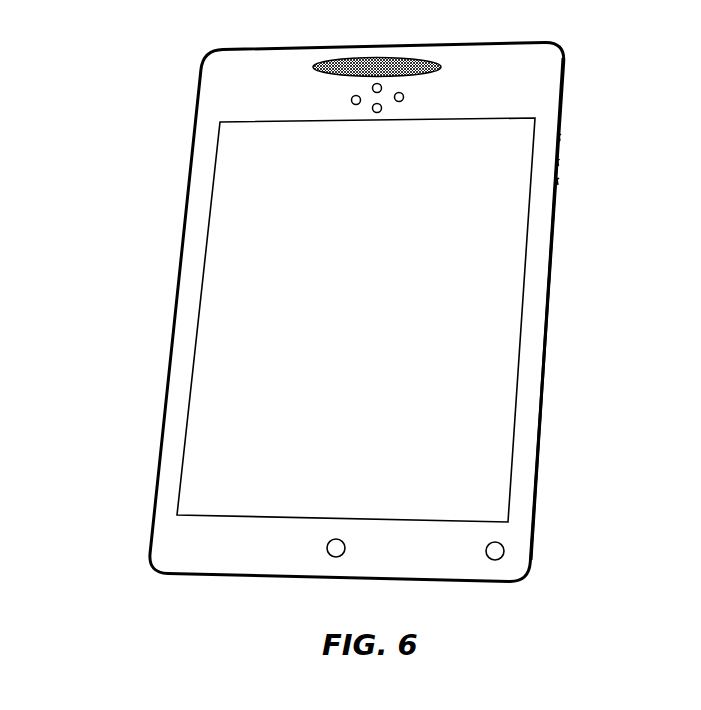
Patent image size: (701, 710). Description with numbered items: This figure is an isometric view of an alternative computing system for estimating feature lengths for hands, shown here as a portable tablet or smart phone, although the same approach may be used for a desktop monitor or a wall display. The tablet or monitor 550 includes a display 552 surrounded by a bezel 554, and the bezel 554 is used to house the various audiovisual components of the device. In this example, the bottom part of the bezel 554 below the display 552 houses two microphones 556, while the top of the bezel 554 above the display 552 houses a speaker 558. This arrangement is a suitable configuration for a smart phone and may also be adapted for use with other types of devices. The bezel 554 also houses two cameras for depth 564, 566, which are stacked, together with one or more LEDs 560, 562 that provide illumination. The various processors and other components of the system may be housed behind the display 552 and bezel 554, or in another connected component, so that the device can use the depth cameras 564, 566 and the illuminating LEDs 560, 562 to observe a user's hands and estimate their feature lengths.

The tablet or monitor 550 is at (140, 316).
The display 552 is at (364, 422).
The bezel 554 is at (530, 367).
The microphones 556 is at (336, 557).
The speaker 558 is at (392, 60).
The LED 560 is at (377, 113).
The LED 562 is at (382, 85).
The camera for depth 564 is at (401, 101).
The camera for depth 566 is at (351, 100).